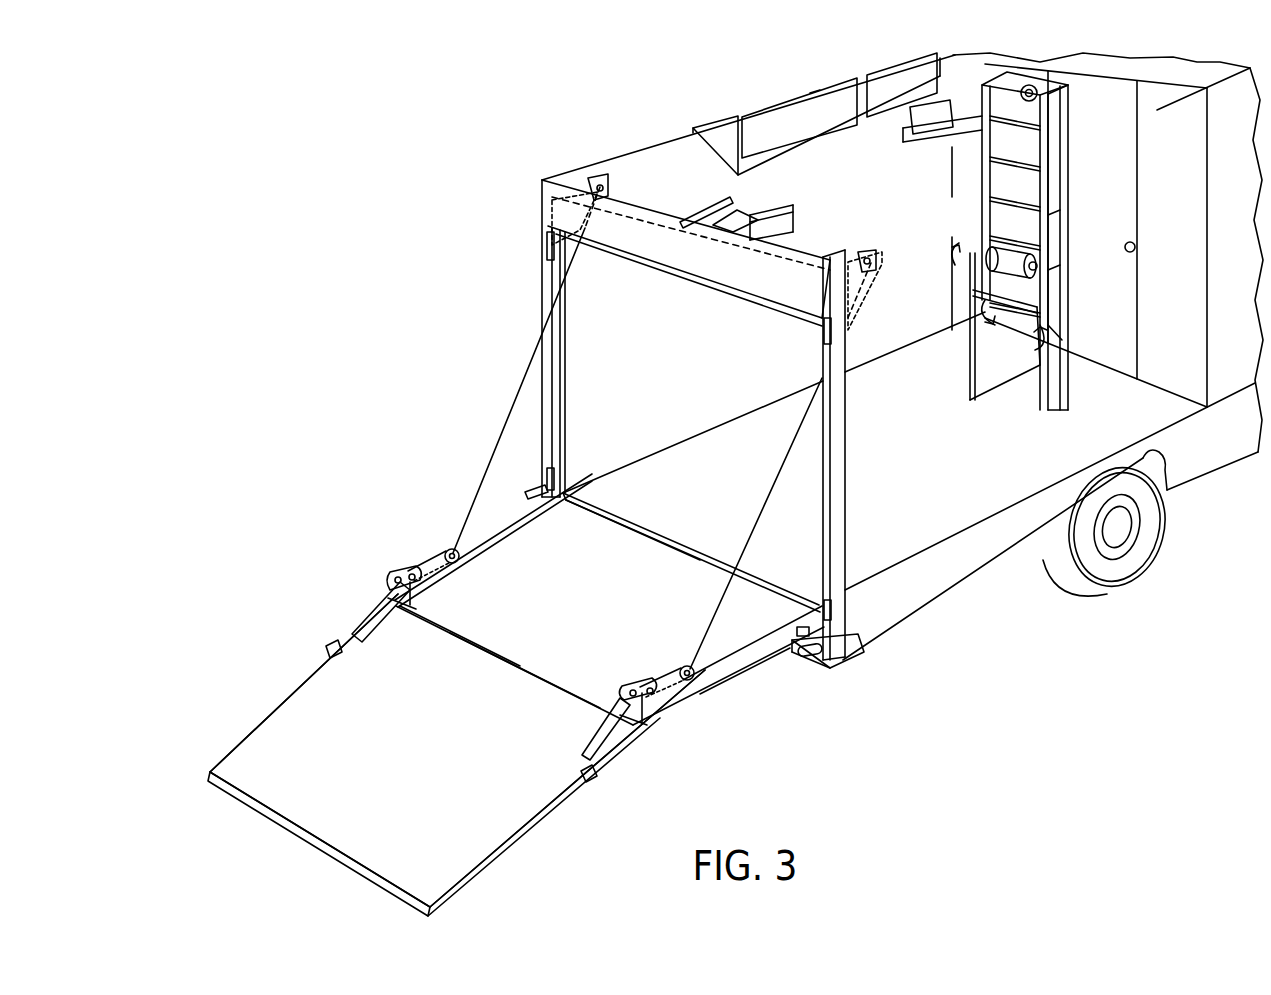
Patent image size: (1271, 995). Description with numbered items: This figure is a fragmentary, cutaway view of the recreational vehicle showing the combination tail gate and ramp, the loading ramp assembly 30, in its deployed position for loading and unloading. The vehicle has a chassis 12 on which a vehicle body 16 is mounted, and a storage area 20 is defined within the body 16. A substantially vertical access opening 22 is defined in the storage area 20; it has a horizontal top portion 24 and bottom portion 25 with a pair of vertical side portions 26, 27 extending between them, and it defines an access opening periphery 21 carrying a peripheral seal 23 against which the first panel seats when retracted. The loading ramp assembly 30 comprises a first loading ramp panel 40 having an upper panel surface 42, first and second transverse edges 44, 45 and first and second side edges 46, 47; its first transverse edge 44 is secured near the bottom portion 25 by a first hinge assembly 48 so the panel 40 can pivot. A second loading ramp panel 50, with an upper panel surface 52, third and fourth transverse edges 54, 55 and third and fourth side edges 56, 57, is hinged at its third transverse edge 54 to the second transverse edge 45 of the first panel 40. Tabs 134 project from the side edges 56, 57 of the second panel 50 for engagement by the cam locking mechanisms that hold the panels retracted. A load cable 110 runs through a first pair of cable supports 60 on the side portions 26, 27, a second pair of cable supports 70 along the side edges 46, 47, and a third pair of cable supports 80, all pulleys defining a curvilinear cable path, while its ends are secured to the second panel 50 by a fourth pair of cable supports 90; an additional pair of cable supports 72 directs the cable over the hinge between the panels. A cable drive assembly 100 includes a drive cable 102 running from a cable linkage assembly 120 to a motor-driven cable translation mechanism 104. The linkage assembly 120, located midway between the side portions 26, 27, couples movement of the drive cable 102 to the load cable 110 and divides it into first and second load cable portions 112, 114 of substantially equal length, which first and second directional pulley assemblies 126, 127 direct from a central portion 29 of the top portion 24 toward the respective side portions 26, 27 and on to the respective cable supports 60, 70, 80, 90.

The chassis 12 is at (1220, 504).
The vehicle body 16 is at (636, 146).
The storage area 20 is at (1174, 410).
The access opening periphery 21 is at (830, 343).
The vertical access opening 22 is at (486, 284).
The peripheral seal 23 is at (702, 268).
The horizontal top portion 24 is at (654, 248).
The horizontal bottom portion 25 is at (682, 547).
The first vertical side portion 26 is at (561, 339).
The second vertical side portion 27 is at (821, 374).
The central portion 29 is at (682, 185).
The loading ramp assembly 30 is at (302, 554).
The first loading ramp panel 40 is at (728, 662).
The upper panel surface 42 is at (530, 492).
The first transverse edge 44 is at (632, 534).
The second transverse edge 45 is at (513, 666).
The first side edge 46 is at (482, 544).
The second side edge 47 is at (760, 648).
The first hinge assembly 48 is at (846, 620).
The second loading ramp panel 50 is at (506, 839).
The upper panel surface 52 is at (371, 659).
The third transverse edge 54 is at (528, 675).
The fourth transverse edge 55 is at (324, 848).
The third side edge 56 is at (288, 700).
The fourth side edge 57 is at (545, 810).
The first pair of cable supports 60 is at (613, 188).
The second pair of cable supports 70 is at (428, 562).
The additional pair of cable supports 72 is at (404, 572).
The third pair of cable supports 80 is at (370, 608).
The fourth pair of cable supports 90 is at (412, 596).
The cable drive assembly 100 is at (970, 386).
The drive cable 102 is at (898, 160).
The cable translation mechanism 104 is at (986, 244).
The load cable 110 is at (710, 222).
The first load cable portion 112 is at (618, 224).
The second load cable portion 114 is at (766, 276).
The cable linkage assembly 120 is at (786, 214).
The first directional pulley assembly 126 is at (586, 172).
The second directional pulley assembly 127 is at (882, 314).
The tabs 134 is at (332, 648).